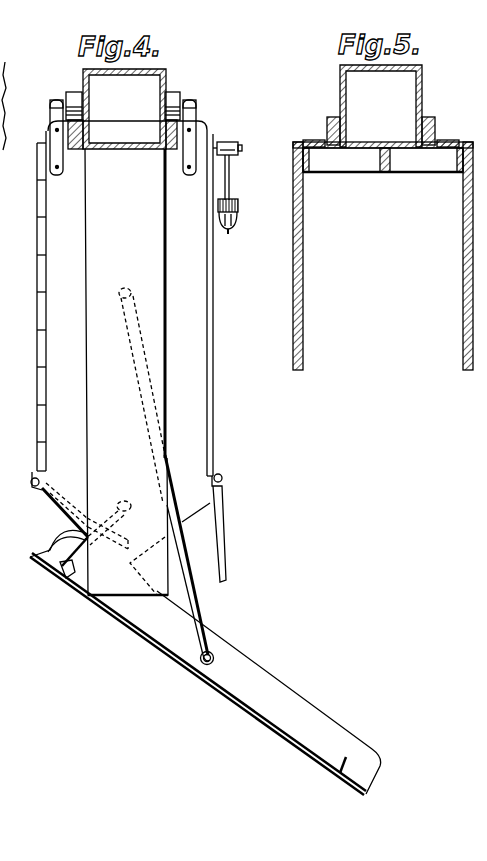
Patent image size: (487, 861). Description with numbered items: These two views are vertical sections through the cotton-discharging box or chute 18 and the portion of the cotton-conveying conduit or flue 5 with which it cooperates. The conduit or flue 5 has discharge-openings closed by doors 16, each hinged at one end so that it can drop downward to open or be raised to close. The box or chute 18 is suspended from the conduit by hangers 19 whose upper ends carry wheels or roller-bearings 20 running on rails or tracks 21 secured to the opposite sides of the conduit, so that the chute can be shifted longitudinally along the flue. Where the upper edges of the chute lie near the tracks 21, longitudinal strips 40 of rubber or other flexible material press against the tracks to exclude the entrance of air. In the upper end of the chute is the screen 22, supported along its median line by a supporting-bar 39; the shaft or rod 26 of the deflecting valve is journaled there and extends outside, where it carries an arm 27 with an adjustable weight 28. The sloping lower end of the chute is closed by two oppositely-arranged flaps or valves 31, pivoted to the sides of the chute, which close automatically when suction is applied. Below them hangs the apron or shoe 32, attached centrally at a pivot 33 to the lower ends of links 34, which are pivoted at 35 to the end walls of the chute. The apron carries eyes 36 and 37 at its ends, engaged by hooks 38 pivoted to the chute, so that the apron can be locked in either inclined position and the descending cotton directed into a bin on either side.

In FIG. 4, the cotton-conveying conduit or flue 5 is at (124, 109).
In FIG. 5, the cotton-conveying conduit or flue 5 is at (381, 106).
In FIG. 4, the door 16 is at (126, 372).
In FIG. 4, the cotton-discharging box or chute 18 is at (170, 346).
In FIG. 5, the cotton-discharging box or chute 18 is at (300, 265).
In FIG. 4, the hanger 19 is at (50, 104).
In FIG. 4, the wheel or roller-bearing 20 is at (73, 92).
In FIG. 4, the rail or track 21 is at (76, 150).
In FIG. 5, the rail or track 21 is at (336, 118).
In FIG. 5, the screen 22 is at (383, 160).
In FIG. 4, the shaft or rod 26 is at (236, 142).
In FIG. 4, the arm 27 is at (229, 175).
In FIG. 4, the adjustable weight 28 is at (238, 206).
In FIG. 4, the door, flap, or valve 31 is at (32, 487).
In FIG. 4, the apron or shoe 32 is at (133, 633).
In FIG. 4, the pivot of apron 33 is at (203, 664).
In FIG. 4, the link 34 is at (206, 610).
In FIG. 4, the pivot of link 35 is at (142, 385).
In FIG. 4, the eye 36 is at (62, 572).
In FIG. 4, the eye 37 is at (340, 774).
In FIG. 4, the hook 38 is at (54, 539).
In FIG. 5, the supporting-bar 39 is at (387, 173).
In FIG. 5, the longitudinal strip 40 is at (320, 139).